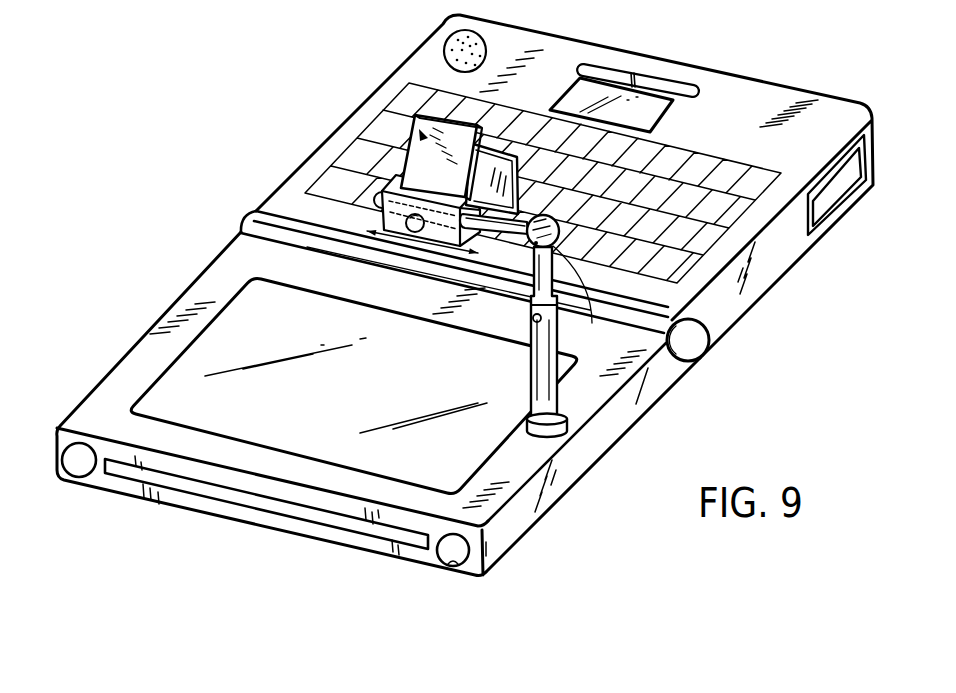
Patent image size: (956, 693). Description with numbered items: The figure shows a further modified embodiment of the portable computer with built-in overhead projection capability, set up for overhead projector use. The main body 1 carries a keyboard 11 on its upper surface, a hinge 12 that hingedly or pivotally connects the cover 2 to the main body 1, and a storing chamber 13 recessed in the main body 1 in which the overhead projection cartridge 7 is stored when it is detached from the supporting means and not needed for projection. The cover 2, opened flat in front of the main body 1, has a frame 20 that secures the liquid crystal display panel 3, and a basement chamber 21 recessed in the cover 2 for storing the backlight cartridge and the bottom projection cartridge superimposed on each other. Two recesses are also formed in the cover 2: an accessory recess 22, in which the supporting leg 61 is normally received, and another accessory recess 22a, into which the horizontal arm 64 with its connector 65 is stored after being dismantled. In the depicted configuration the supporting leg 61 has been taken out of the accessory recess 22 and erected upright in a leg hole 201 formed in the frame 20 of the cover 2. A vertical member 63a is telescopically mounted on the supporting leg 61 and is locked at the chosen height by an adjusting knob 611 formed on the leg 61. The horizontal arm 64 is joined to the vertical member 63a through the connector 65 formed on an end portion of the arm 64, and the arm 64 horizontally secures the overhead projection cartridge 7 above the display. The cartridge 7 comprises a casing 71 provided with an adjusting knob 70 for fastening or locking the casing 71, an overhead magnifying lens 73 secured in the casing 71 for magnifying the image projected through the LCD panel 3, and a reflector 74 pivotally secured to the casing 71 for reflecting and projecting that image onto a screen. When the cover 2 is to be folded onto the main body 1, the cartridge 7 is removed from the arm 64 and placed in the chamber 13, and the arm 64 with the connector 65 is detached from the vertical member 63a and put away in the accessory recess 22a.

The main body 1 is at (757, 78).
The cover 2 is at (612, 447).
The liquid crystal display panel 3 is at (293, 433).
The overhead projection cartridge 7 is at (419, 131).
The keyboard 11 is at (360, 148).
The hinge 12 is at (697, 342).
The storing chamber 13 is at (835, 196).
The frame 20 is at (120, 373).
The basement chamber 21 is at (413, 540).
The accessory recess 22 is at (458, 566).
The accessory recess 22a is at (80, 470).
The supporting leg 61 is at (553, 393).
The vertical member 63a is at (593, 325).
The horizontal arm 64 is at (380, 192).
The connector 65 is at (625, 136).
The adjusting knob 70 is at (367, 238).
The casing 71 is at (383, 212).
The overhead magnifying lens 73 is at (482, 124).
The reflector 74 is at (482, 124).
The leg hole 201 is at (543, 440).
The adjusting knob 611 is at (643, 365).